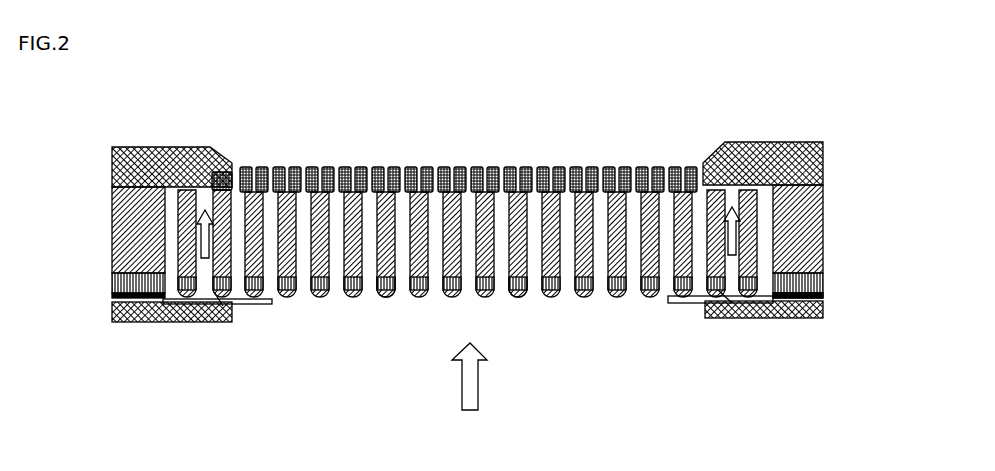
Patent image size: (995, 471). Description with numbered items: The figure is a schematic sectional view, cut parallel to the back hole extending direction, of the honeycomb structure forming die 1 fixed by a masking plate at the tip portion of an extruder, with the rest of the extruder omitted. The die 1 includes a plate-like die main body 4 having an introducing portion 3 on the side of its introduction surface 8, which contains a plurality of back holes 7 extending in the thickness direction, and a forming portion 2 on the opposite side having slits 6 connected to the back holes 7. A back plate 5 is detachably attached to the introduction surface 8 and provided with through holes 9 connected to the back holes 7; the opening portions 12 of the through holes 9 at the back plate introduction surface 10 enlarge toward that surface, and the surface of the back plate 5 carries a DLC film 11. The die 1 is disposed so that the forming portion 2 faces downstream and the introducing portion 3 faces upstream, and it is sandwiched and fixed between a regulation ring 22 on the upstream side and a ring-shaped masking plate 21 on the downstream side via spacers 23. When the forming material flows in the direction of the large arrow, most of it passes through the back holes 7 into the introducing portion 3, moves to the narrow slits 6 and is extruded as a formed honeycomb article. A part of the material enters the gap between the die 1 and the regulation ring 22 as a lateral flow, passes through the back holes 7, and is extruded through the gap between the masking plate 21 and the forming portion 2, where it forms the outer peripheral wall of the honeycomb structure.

The honeycomb structure forming die 1 is at (660, 111).
The forming portion 2 is at (513, 172).
The introducing portion 3 is at (825, 193).
The die main body 4 is at (112, 170).
The back plate 5 is at (112, 277).
The slits 6 is at (438, 170).
The back holes 7 is at (370, 240).
The introduction surface 8 is at (584, 297).
The through holes 9 is at (468, 240).
The back plate introduction surface 10 is at (553, 297).
The DLC film 11 is at (823, 296).
The opening portions 12 is at (380, 297).
The masking plate 21 is at (140, 157).
The regulation ring 22 is at (193, 314).
The spacers 23 is at (112, 299).